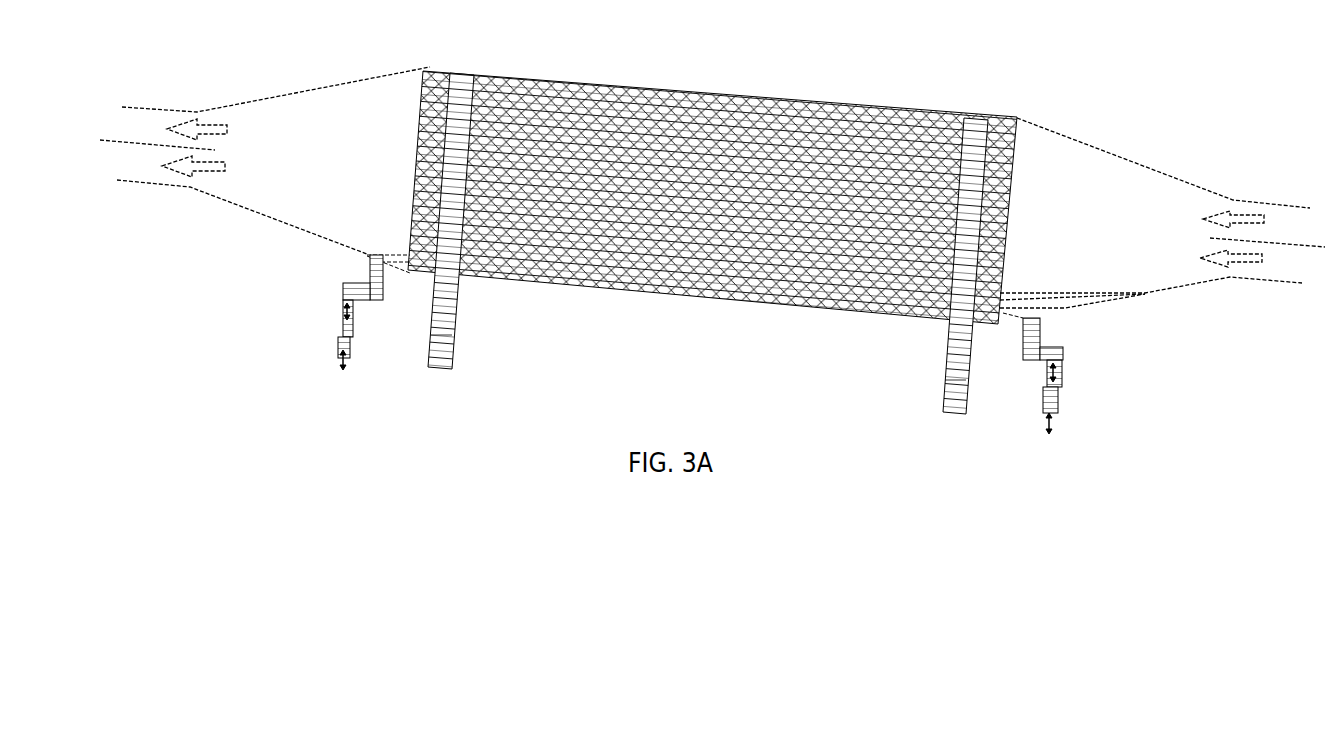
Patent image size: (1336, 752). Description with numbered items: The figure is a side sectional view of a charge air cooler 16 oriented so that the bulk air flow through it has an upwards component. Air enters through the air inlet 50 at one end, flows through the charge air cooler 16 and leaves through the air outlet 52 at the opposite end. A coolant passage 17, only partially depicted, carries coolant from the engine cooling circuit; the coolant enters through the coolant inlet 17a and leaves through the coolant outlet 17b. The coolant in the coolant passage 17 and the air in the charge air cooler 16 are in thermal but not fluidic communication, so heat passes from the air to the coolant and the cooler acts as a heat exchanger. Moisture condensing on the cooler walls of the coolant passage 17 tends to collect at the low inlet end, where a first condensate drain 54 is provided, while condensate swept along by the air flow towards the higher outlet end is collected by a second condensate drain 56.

The charge air cooler 16 is at (636, 95).
The coolant passage 17 is at (713, 272).
The coolant inlet 17a is at (439, 369).
The coolant outlet 17b is at (951, 414).
The air inlet 50 is at (1254, 208).
The air outlet 52 is at (148, 115).
The first condensate drain 54 is at (1033, 330).
The second condensate drain 56 is at (370, 276).